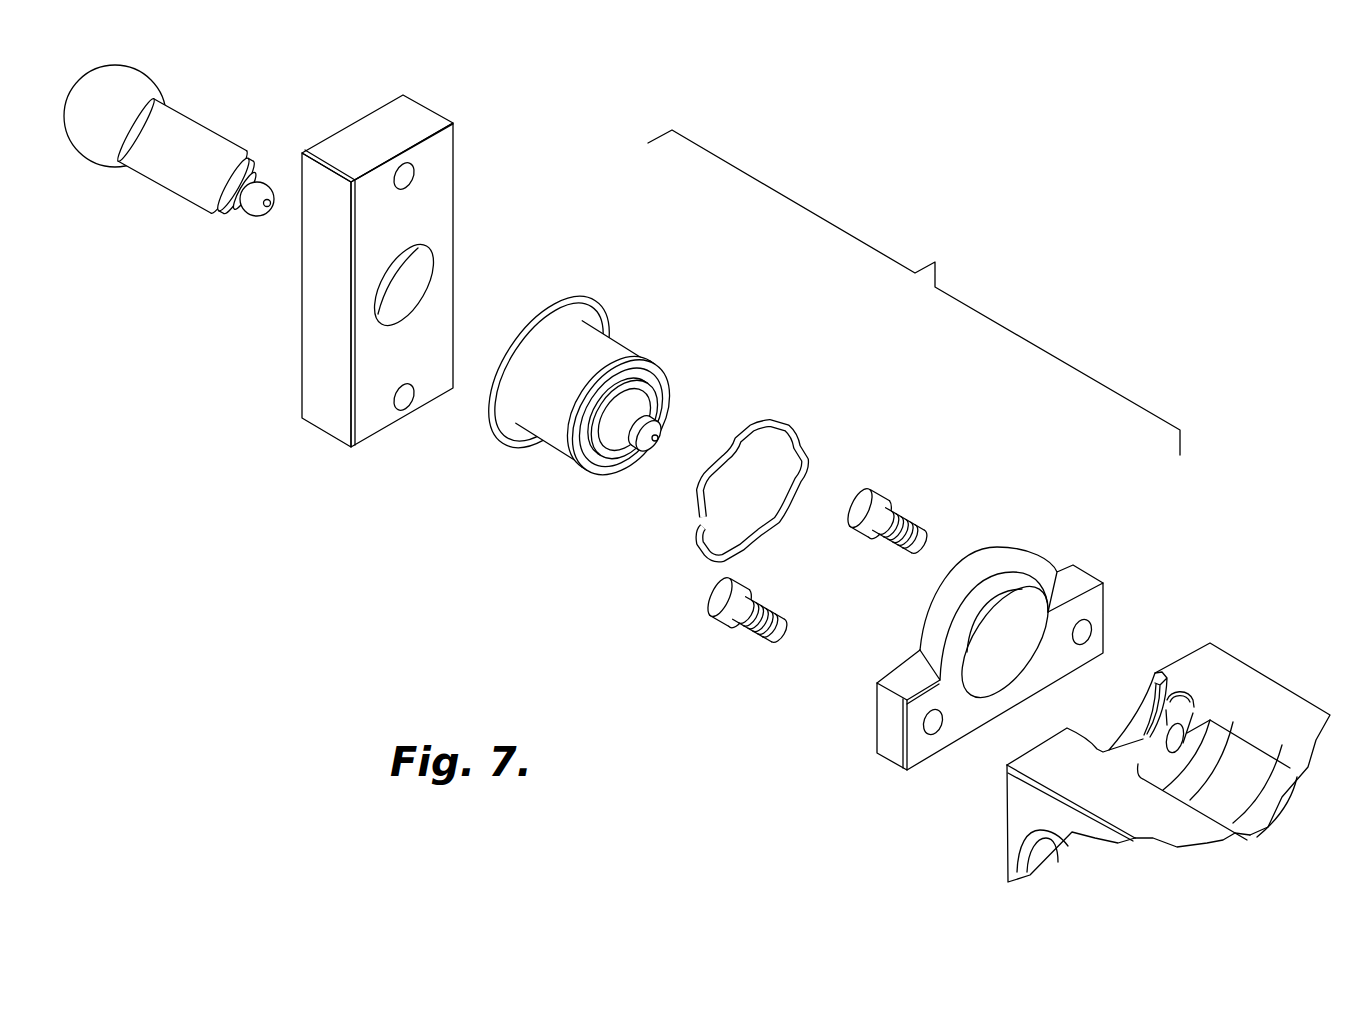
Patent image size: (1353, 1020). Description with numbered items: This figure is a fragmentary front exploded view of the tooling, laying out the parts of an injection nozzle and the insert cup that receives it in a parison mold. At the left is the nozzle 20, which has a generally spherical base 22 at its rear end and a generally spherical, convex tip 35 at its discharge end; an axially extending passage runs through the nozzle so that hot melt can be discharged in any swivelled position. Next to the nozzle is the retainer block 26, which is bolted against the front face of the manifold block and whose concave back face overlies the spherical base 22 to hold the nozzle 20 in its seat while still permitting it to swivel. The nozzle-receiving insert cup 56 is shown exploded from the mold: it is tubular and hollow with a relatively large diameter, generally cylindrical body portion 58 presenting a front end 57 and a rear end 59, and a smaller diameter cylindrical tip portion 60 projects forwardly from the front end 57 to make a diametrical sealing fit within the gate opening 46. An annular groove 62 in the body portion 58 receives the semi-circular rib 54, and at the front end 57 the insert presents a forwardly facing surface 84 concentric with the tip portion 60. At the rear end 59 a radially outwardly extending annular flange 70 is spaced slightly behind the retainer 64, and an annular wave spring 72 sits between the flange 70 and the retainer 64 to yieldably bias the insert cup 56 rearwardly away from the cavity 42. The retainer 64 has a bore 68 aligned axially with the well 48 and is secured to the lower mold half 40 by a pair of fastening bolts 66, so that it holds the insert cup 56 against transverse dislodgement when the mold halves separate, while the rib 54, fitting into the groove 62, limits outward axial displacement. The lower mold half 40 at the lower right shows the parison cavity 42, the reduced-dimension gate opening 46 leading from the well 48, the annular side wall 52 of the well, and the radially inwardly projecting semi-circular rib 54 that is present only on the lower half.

The nozzle 20 is at (177, 164).
The spherical base 22 is at (138, 87).
The retainer block 26 is at (442, 167).
The convex tip 35 is at (253, 216).
The lower mold half 40 is at (1177, 747).
The parison cavity 42 is at (1230, 785).
The gate opening 46 is at (1172, 735).
The well 48 is at (1142, 707).
The annular side wall 52 is at (1177, 700).
The semi-circular rib 54 is at (1105, 738).
The insert cup 56 is at (607, 399).
The front end 57 is at (672, 385).
The body portion 58 is at (547, 427).
The rear end 59 is at (548, 302).
The tip portion 60 is at (642, 442).
The annular groove 62 is at (587, 462).
The retainer 64 is at (1030, 647).
The fastening bolts 66 is at (907, 520).
The bore 68 is at (1027, 602).
The annular flange 70 is at (597, 313).
The spring 72 is at (792, 437).
The forwardly facing surface 84 is at (663, 408).